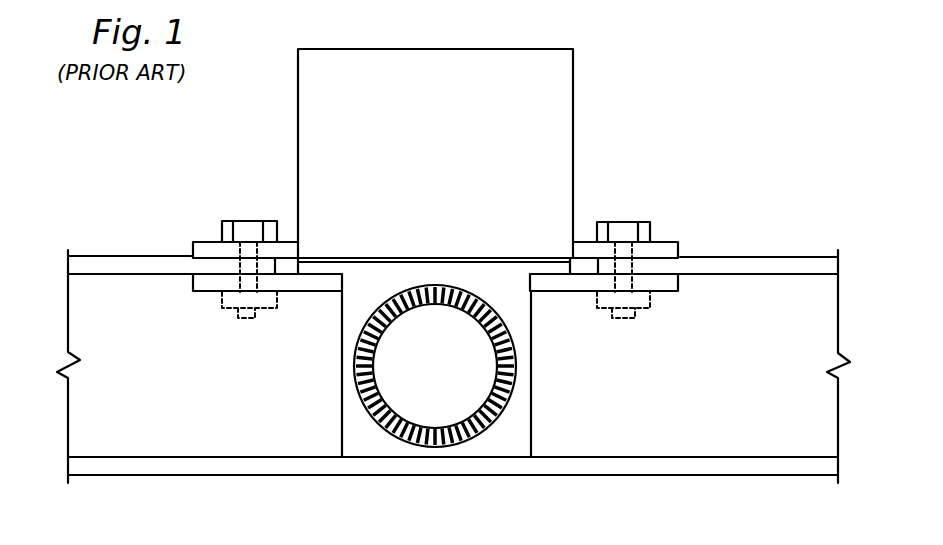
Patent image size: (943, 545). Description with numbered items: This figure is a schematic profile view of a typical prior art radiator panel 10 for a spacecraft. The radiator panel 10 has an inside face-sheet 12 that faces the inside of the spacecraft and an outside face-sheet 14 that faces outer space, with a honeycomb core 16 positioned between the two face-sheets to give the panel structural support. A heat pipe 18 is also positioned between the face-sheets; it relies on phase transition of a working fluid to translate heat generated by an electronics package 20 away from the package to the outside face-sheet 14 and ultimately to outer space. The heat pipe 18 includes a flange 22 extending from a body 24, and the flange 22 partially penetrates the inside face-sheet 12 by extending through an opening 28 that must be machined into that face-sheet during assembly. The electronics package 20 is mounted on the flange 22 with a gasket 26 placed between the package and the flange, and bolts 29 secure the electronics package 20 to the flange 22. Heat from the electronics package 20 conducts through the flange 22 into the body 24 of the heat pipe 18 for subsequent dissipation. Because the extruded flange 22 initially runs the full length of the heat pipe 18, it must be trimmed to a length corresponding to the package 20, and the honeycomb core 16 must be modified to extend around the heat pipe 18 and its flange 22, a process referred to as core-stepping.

The radiator panel 10 is at (787, 176).
The inside face-sheet 12 is at (803, 257).
The outside face-sheet 14 is at (720, 476).
The honeycomb core 16 is at (719, 384).
The heat pipe 18 is at (532, 398).
The electronics package 20 is at (478, 48).
The flange 22 is at (582, 291).
The body 24 is at (533, 355).
The gasket 26 is at (472, 258).
The opening 28 is at (597, 267).
The bolts 29 is at (248, 221).